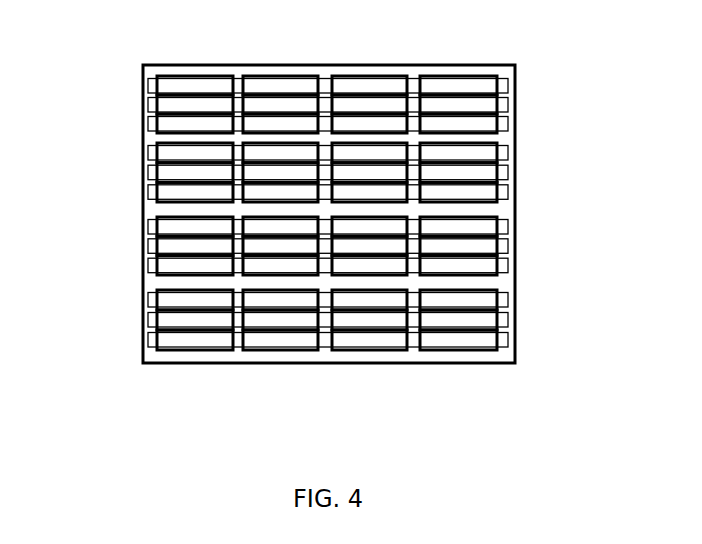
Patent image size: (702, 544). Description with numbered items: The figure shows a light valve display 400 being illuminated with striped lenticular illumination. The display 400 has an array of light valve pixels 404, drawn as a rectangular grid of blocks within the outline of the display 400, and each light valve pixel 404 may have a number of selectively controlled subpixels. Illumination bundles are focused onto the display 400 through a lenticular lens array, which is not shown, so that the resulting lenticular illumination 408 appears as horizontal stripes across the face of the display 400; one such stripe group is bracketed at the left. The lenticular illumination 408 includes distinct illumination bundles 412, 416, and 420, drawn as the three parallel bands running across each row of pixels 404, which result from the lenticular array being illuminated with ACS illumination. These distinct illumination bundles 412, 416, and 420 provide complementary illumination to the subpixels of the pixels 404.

The light valve display 400 is at (142, 355).
The light valve pixel 404 is at (313, 78).
The lenticular illumination 408 is at (328, 107).
The illumination bundle 412 is at (508, 83).
The illumination bundle 416 is at (508, 107).
The illumination bundle 420 is at (508, 127).